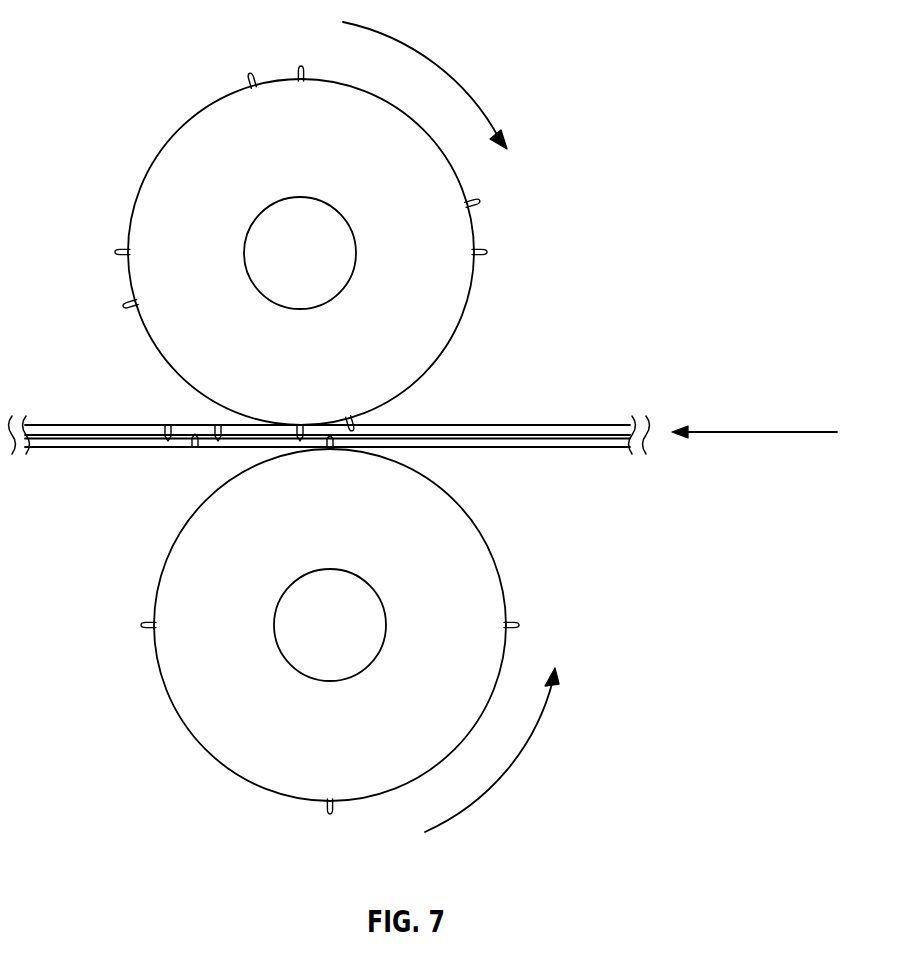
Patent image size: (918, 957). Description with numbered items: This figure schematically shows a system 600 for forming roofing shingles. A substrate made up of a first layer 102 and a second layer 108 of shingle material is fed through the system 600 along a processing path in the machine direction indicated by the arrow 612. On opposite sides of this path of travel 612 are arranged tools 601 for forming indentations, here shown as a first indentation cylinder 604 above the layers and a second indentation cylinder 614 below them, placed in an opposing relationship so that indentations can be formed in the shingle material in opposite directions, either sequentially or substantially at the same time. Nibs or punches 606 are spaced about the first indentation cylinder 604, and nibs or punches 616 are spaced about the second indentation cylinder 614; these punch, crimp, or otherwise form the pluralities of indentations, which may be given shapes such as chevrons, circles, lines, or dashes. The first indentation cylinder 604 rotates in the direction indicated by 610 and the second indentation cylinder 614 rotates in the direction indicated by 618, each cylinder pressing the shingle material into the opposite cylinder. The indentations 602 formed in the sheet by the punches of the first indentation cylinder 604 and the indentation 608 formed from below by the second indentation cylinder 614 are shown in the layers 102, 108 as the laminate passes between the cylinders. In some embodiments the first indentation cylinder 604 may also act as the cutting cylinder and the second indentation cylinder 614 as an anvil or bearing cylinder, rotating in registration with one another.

The system 600 is at (104, 76).
The tools 601 is at (136, 146).
The perforations 602 is at (166, 425).
The first indentation cylinder 604 is at (196, 112).
The nibs or punches 606 is at (113, 252).
The second roller pin 608 is at (196, 447).
The direction of rotation of the first indentation cylinder 610 is at (452, 72).
The path of travel 612 is at (768, 432).
The second indentation cylinder 614 is at (155, 648).
The nibs or punches 616 is at (323, 803).
The direction of rotation of the second indentation cylinder 618 is at (505, 772).
The first layer 102 is at (70, 425).
The second layer 108 is at (72, 450).